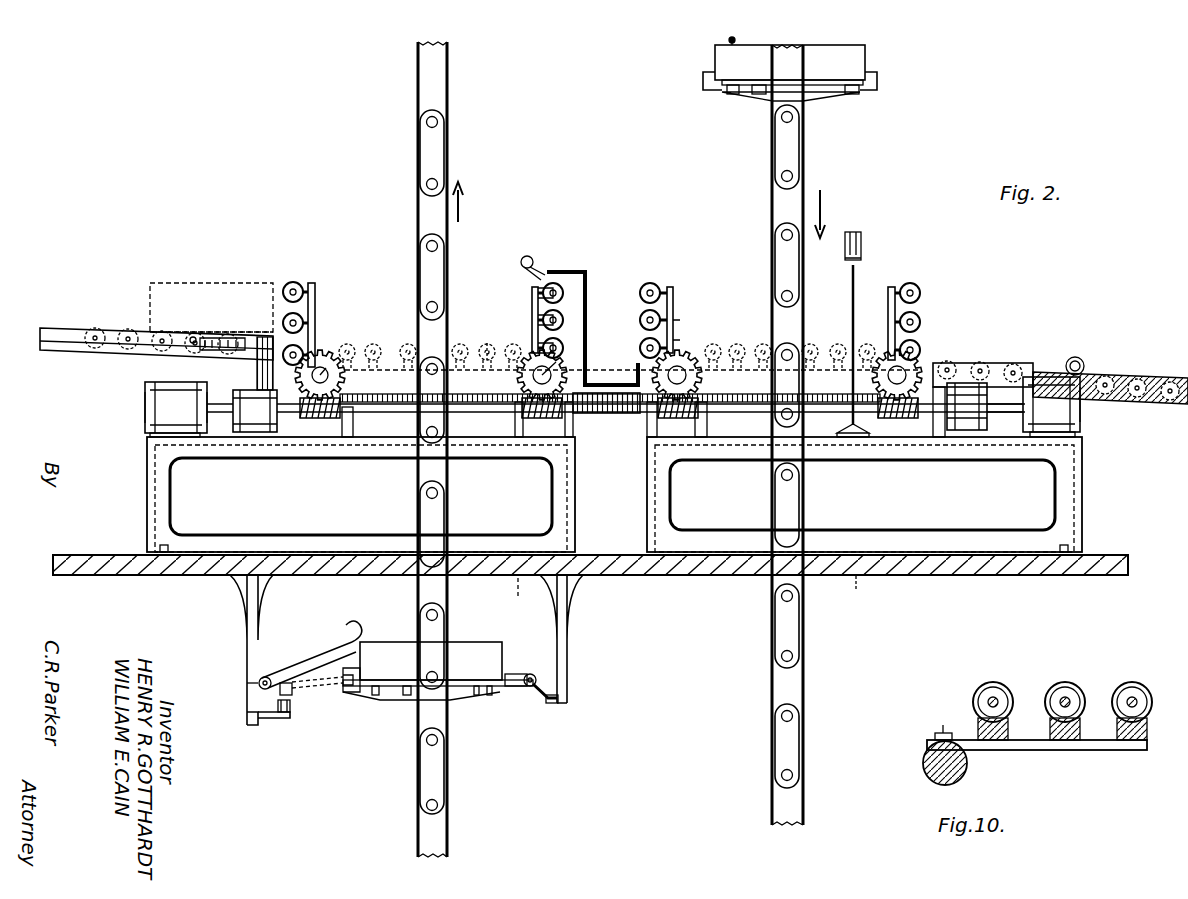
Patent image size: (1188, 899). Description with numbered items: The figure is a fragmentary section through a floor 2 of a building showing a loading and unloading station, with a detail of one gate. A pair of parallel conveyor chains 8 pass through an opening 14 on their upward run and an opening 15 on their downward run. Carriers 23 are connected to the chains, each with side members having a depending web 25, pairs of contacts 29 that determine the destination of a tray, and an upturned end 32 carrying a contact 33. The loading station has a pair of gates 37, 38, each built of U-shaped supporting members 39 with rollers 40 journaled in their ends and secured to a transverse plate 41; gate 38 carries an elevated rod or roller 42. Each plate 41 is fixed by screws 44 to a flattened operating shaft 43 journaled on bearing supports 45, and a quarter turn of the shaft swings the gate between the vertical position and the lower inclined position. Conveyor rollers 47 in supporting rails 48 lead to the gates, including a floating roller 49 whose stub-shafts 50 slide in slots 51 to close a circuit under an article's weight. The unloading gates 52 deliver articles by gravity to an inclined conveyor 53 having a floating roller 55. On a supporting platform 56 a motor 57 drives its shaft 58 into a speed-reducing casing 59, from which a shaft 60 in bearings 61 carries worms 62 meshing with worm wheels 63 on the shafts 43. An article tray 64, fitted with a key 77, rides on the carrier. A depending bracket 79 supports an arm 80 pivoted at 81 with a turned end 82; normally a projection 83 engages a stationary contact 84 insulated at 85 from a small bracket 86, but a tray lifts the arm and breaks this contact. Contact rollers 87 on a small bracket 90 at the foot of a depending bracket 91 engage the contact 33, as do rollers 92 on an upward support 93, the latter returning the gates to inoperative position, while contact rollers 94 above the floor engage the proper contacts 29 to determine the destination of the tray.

In FIG. 2, the floor 2 is at (195, 578).
In FIG. 2, the conveyor chains 8 is at (418, 752).
In FIG. 2, the opening 14 is at (520, 595).
In FIG. 2, the opening 15 is at (860, 594).
In FIG. 2, the carrier 23 is at (818, 86).
In FIG. 2, the depending web 25 is at (760, 97).
In FIG. 2, the contacts 29 is at (730, 93).
In FIG. 2, the upturned end 32 is at (705, 65).
In FIG. 2, the contact 33 is at (516, 674).
In FIG. 2, the loading gate 37 is at (348, 340).
In FIG. 2, the loading gate 38 is at (488, 344).
In FIG. 2, the U-shaped supporting members 39 is at (666, 290).
In FIG. 10, the U-shaped supporting members 39 is at (1072, 740).
In FIG. 2, the rollers 40 is at (293, 285).
In FIG. 10, the rollers 40 is at (1125, 682).
In FIG. 2, the plate 41 is at (316, 292).
In FIG. 10, the plate 41 is at (1120, 752).
In FIG. 2, the rod or roller 42 is at (533, 292).
In FIG. 2, the operating shaft 43 is at (312, 376).
In FIG. 10, the operating shaft 43 is at (925, 768).
In FIG. 10, the screws 44 is at (943, 725).
In FIG. 2, the bearing supports 45 is at (622, 413).
In FIG. 2, the conveyor rollers 47 is at (112, 320).
In FIG. 2, the supporting rails 48 is at (75, 350).
In FIG. 2, the floating roller 49 is at (200, 332).
In FIG. 2, the stub-shafts 50 is at (190, 342).
In FIG. 2, the slots 51 is at (197, 347).
In FIG. 2, the unloading gates 52 is at (675, 330).
In FIG. 2, the conveyor 53 is at (1160, 372).
In FIG. 2, the floating roller 55 is at (1077, 358).
In FIG. 2, the supporting platform 56 is at (575, 518).
In FIG. 2, the motor 57 is at (150, 415).
In FIG. 2, the motor shaft 58 is at (222, 418).
In FIG. 2, the casing 59 is at (255, 432).
In FIG. 2, the shaft 60 is at (294, 414).
In FIG. 2, the bearings 61 is at (348, 437).
In FIG. 2, the worms 62 is at (900, 414).
In FIG. 2, the worm wheel 63 is at (324, 360).
In FIG. 2, the article tray 64 is at (865, 52).
In FIG. 2, the jack plug or key 77 is at (728, 40).
In FIG. 2, the depending bracket 79 is at (255, 615).
In FIG. 2, the arm 80 is at (312, 660).
In FIG. 2, the pivot 81 is at (267, 677).
In FIG. 2, the turned end 82 is at (360, 622).
In FIG. 2, the projection 83 is at (294, 695).
In FIG. 2, the stationary contact 84 is at (290, 712).
In FIG. 2, the insulation 85 is at (282, 718).
In FIG. 2, the small bracket 86 is at (258, 725).
In FIG. 2, the contact rollers 87 is at (532, 674).
In FIG. 2, the small bracket 90 is at (553, 703).
In FIG. 2, the depending bracket 91 is at (567, 648).
In FIG. 2, the contact rollers 92 is at (527, 256).
In FIG. 2, the support 93 is at (590, 300).
In FIG. 2, the contact rollers 94 is at (858, 236).